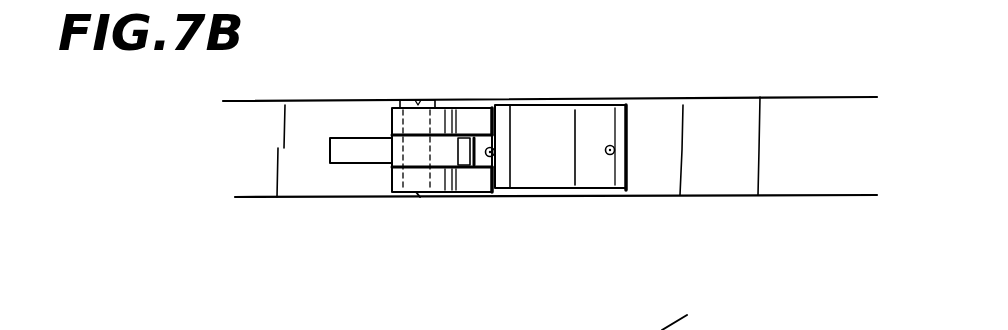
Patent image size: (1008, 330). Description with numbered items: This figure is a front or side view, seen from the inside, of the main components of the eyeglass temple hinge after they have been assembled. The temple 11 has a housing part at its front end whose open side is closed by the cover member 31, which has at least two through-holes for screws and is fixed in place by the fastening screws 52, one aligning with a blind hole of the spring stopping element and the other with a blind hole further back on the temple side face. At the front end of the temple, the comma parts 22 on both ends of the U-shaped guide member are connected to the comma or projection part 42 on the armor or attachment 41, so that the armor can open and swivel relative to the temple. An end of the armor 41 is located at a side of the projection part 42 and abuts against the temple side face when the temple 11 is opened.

The temple 11 is at (702, 117).
The comma part 22 is at (397, 105).
The cover member 31 is at (552, 177).
The armor 41 is at (315, 123).
The projection part 42 is at (348, 158).
The fastening screw 52 is at (494, 149).